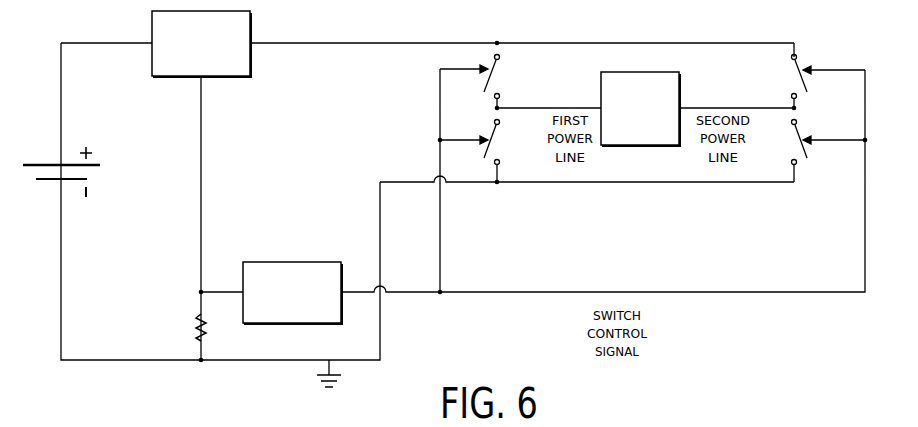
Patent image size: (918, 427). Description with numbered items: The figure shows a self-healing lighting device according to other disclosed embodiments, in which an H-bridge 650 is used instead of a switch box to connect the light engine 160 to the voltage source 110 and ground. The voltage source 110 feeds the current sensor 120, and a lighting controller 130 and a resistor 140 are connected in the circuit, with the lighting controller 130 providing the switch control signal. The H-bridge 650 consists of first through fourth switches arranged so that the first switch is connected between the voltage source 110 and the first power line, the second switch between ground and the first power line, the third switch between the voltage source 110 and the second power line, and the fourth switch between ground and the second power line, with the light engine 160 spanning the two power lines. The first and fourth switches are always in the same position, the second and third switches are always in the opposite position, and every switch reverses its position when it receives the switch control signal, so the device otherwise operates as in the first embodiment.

The voltage source 110 is at (97, 171).
The current sensor 120 is at (230, 77).
The lighting controller 130 is at (290, 262).
The resistor 140 is at (194, 330).
The light engine 160 is at (638, 147).
The H-bridge 650 is at (576, 76).